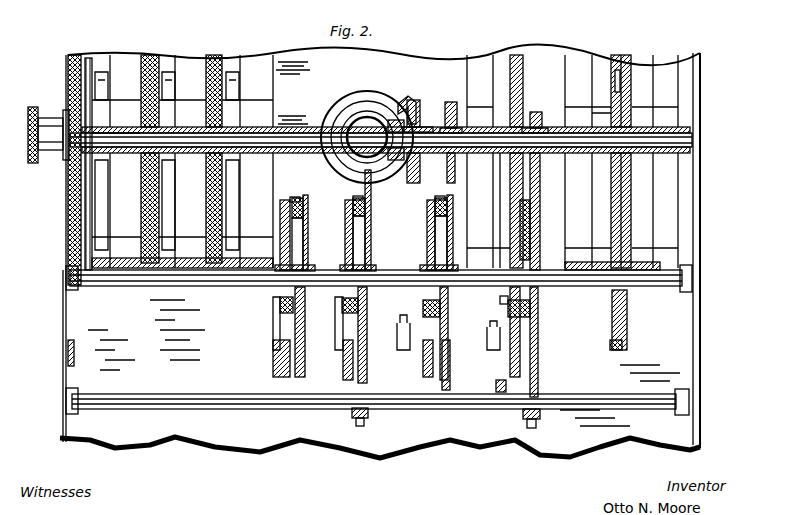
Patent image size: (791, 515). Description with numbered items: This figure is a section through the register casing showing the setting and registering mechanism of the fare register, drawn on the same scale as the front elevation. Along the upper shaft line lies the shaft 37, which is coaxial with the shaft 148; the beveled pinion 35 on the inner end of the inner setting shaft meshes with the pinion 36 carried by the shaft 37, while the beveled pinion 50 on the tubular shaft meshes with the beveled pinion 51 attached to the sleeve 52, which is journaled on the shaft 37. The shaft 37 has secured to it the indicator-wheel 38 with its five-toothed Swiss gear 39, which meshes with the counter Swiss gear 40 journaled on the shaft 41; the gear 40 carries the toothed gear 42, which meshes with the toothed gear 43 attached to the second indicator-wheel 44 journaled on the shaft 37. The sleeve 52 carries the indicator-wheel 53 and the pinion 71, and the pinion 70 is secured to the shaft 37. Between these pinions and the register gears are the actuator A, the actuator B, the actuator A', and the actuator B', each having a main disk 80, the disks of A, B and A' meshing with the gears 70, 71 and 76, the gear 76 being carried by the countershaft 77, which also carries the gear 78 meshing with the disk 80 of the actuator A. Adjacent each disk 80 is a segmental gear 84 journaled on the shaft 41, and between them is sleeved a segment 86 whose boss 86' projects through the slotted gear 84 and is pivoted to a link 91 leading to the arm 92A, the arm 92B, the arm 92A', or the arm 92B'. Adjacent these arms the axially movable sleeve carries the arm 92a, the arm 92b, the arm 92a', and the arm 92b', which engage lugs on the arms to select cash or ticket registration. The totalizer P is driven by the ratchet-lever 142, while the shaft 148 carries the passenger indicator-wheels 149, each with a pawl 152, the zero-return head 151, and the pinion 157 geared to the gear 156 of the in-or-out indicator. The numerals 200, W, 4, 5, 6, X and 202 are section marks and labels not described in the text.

The head 151 is at (34, 106).
The pinion 157 is at (78, 58).
The indicator-wheels 149 is at (147, 66).
The pawl 152 is at (228, 105).
The shaft 148 is at (140, 137).
The gear 156 is at (74, 352).
The beveled pinion 50 is at (340, 118).
The beveled pinion 35 is at (366, 112).
The shaft 37 is at (335, 132).
The pinion 36 is at (398, 104).
The beveled pinion 51 is at (406, 102).
The sleeve 52 is at (436, 127).
The pinion 71 is at (456, 110).
The indicator-wheel 53 is at (500, 80).
The pinion 70 is at (537, 112).
The actuator A is at (539, 222).
The toothed gear 43 is at (617, 75).
The indicator-wheel 44 is at (580, 68).
The Swiss gear 39 is at (655, 180).
The indicator-wheel 38 is at (663, 225).
The counter Swiss gear 40 is at (625, 335).
The shaft 41 is at (228, 287).
The toothed gear 42 is at (611, 332).
The actuator B' is at (306, 232).
The actuator A' is at (367, 220).
The actuator B is at (426, 232).
The segmental gear 84 is at (285, 198).
The segment 86 is at (366, 258).
The main disk 80 is at (303, 360).
The boss 86' is at (427, 311).
The link 91 is at (506, 302).
The arm 92a is at (474, 359).
The arm 92b is at (398, 400).
The arm 92B is at (432, 390).
The arm 92A is at (478, 409).
The arm 92b' is at (290, 364).
The arm 92B' is at (268, 406).
The arm 92A' is at (322, 412).
The arm 92a' is at (347, 403).
The gear 76 is at (358, 427).
The gear 78 is at (530, 429).
The countershaft 77 is at (215, 402).
The part 200 is at (83, 6).
The totalizer P is at (131, 6).
The ratchet-lever 142 is at (170, 6).
The part W is at (221, 6).
The part 4 is at (381, 5).
The part 5 is at (498, 12).
The part 6 is at (549, 14).
The part X is at (633, 7).
The part 202 is at (726, 21).